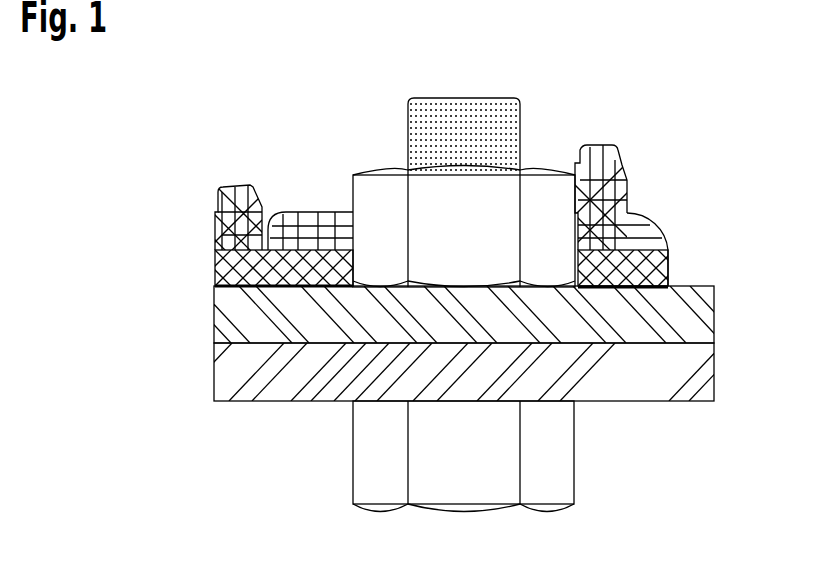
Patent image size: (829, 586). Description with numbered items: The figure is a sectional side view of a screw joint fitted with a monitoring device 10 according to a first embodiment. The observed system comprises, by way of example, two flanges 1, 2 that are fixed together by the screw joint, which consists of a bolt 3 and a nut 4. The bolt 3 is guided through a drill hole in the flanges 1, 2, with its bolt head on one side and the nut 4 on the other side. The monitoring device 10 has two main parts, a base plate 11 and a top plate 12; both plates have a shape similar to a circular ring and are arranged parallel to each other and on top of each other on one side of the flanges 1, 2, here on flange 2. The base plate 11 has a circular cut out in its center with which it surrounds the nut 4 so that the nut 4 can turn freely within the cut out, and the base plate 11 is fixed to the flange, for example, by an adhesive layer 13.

The flange 1 is at (245, 370).
The flange 2 is at (248, 315).
The bolt 3 is at (477, 127).
The nut 4 is at (372, 190).
The monitoring device 10 is at (636, 136).
The base plate 11 is at (222, 268).
The top plate 12 is at (640, 228).
The adhesive layer 13 is at (671, 283).